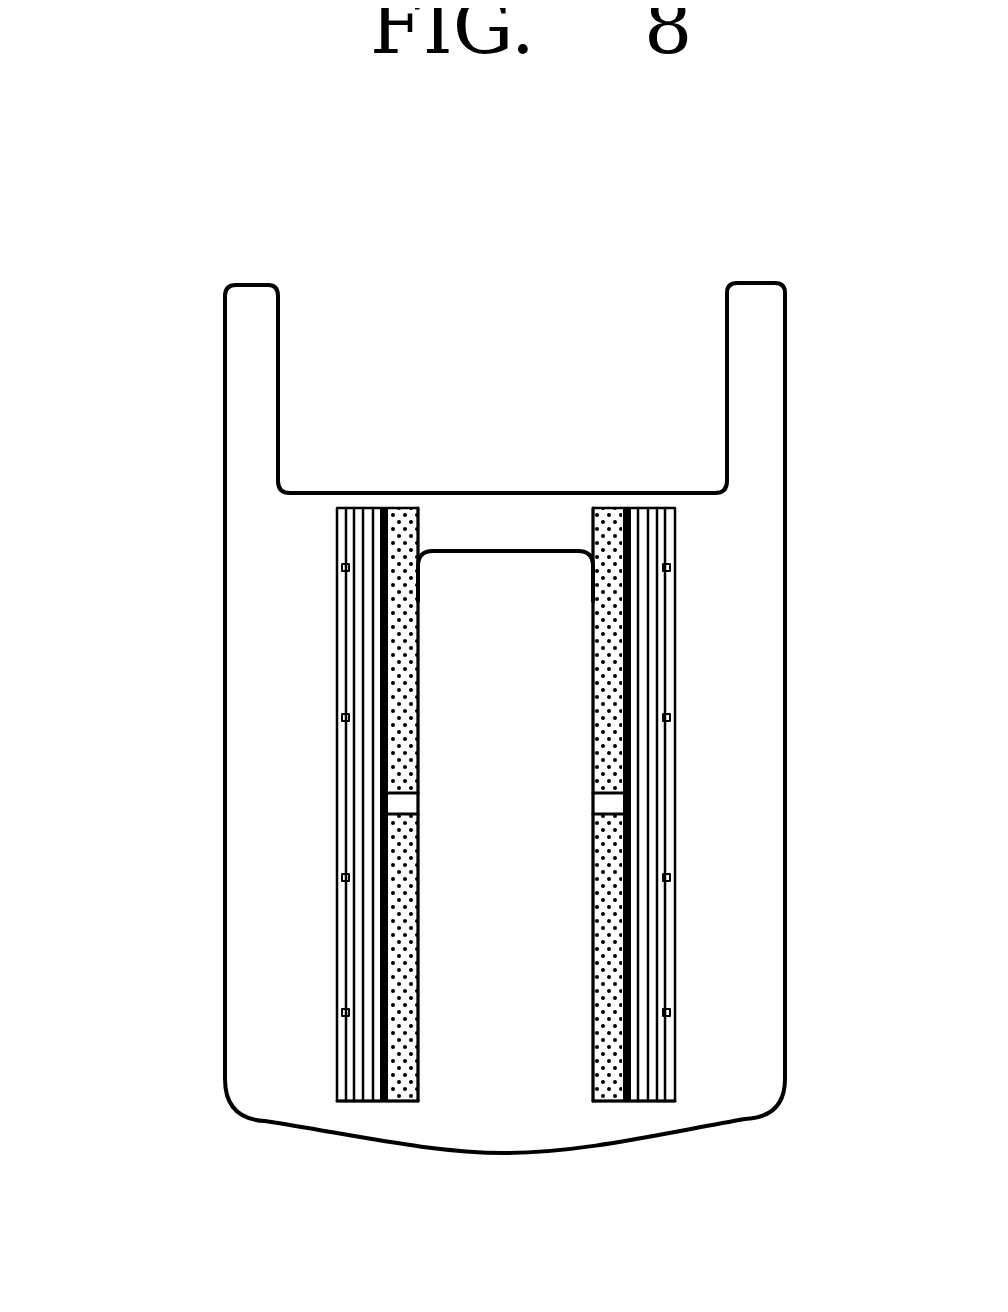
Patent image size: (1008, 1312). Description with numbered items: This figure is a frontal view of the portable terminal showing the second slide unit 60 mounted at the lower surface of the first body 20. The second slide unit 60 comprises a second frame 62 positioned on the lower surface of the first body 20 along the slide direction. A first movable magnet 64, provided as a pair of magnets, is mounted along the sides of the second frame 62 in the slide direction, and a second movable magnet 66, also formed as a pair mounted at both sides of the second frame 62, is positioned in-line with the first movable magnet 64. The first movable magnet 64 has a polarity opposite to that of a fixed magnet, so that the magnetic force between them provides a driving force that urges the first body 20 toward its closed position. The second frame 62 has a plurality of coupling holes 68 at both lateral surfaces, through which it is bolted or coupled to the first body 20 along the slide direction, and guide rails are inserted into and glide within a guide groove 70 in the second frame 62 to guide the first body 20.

The first body 20 is at (242, 405).
The second slide unit 60 is at (454, 787).
The second frame 62 is at (490, 522).
The first movable magnet 64 is at (608, 992).
The second movable magnet 66 is at (595, 710).
The coupling holes 68 is at (346, 877).
The guide groove 70 is at (373, 1100).